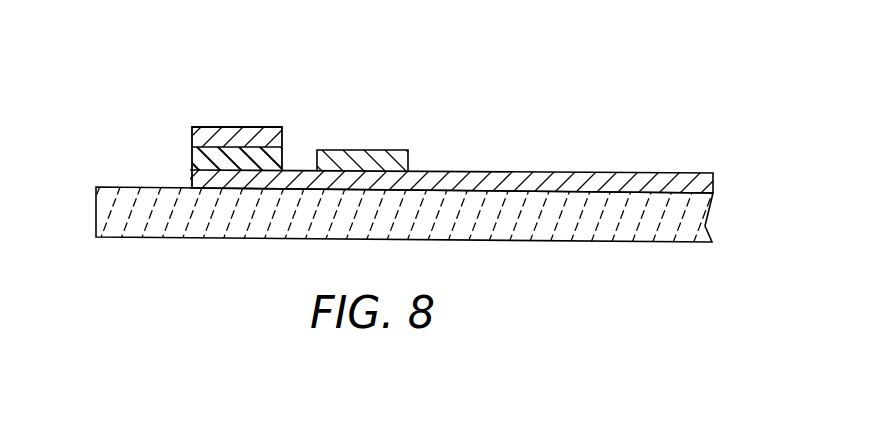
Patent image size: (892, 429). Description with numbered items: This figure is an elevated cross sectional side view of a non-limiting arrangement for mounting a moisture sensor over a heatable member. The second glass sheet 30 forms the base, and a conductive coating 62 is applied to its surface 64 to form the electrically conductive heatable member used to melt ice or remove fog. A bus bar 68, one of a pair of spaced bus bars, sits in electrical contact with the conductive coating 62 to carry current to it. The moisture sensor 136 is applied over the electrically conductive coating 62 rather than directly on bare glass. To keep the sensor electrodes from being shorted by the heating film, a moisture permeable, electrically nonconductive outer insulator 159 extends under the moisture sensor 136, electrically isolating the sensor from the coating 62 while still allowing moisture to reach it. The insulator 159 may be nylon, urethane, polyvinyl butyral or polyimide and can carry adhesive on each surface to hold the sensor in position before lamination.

The second glass sheet 30 is at (133, 238).
The conductive coating 62 is at (547, 172).
The surface 64 is at (633, 192).
The bus bar 68 is at (352, 150).
The moisture sensor 136 is at (192, 137).
The outer insulator 159 is at (190, 160).